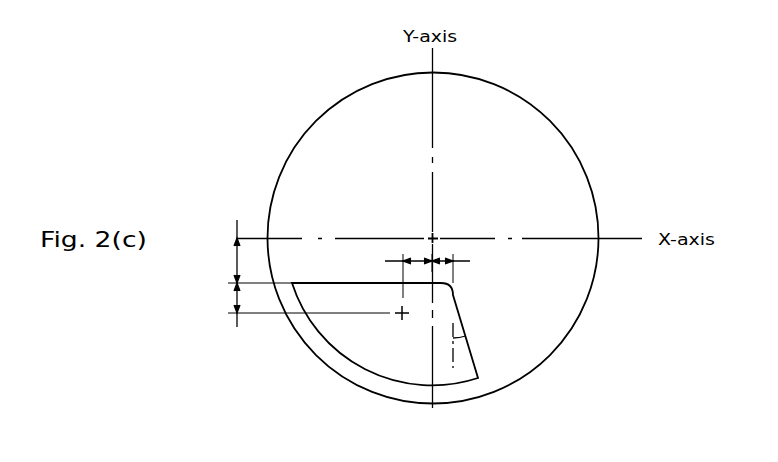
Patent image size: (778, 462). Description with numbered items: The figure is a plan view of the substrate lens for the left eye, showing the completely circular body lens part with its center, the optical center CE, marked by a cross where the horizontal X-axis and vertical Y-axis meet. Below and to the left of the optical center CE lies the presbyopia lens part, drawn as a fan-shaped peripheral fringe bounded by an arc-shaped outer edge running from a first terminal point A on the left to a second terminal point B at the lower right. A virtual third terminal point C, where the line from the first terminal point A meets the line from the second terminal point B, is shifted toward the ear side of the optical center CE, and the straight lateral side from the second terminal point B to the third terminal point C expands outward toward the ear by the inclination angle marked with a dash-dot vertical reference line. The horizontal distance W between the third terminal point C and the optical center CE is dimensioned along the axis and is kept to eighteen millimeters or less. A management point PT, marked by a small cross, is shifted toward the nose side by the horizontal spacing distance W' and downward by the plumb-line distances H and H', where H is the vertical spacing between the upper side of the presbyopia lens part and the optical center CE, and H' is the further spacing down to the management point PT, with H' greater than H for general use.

The optical center CE is at (444, 229).
The management point PT is at (401, 324).
The first terminal point A is at (288, 271).
The second terminal point B is at (491, 383).
The third terminal point C is at (462, 282).
The plumb-line spacing distance H is at (251, 273).
The plumb-line spacing distance H' is at (300, 298).
The horizontal distance W is at (442, 263).
The horizontal spacing distance W' is at (427, 270).